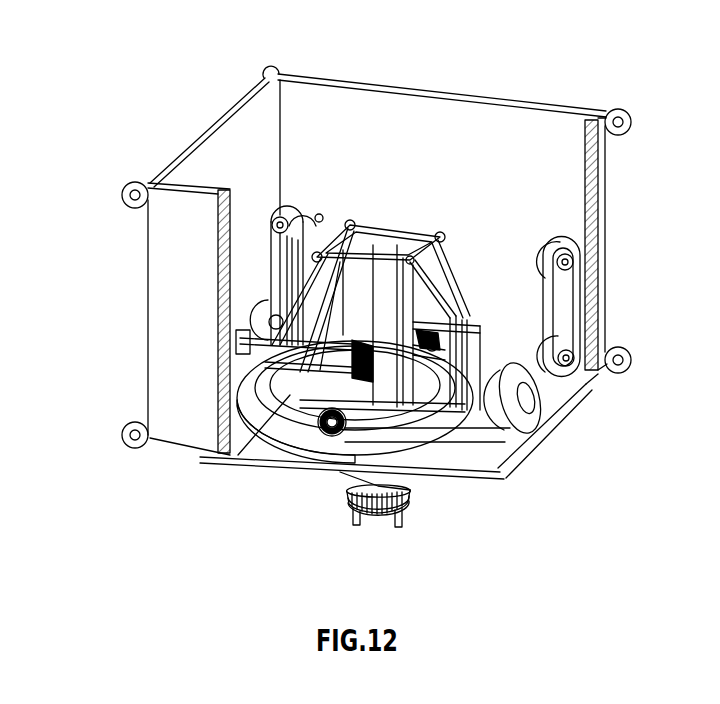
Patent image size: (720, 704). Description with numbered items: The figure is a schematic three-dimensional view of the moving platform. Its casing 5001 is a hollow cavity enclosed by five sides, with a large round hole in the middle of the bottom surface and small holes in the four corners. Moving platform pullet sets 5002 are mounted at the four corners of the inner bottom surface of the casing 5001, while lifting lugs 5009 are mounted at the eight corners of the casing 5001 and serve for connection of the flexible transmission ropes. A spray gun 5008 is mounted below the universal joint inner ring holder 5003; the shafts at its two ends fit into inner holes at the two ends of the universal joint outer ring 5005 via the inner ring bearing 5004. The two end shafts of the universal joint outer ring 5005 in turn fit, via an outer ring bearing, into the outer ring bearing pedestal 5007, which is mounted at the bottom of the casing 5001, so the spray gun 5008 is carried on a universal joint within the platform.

The casing 5001 is at (170, 342).
The moving platform pullet sets 5002 is at (270, 233).
The universal joint inner ring holder 5003 is at (410, 258).
The inner ring bearing 5004 is at (335, 440).
The universal joint outer ring 5005 is at (245, 455).
The outer ring bearing pedestal 5007 is at (523, 428).
The spray gun 5008 is at (410, 507).
The lifting lugs 5009 is at (131, 418).